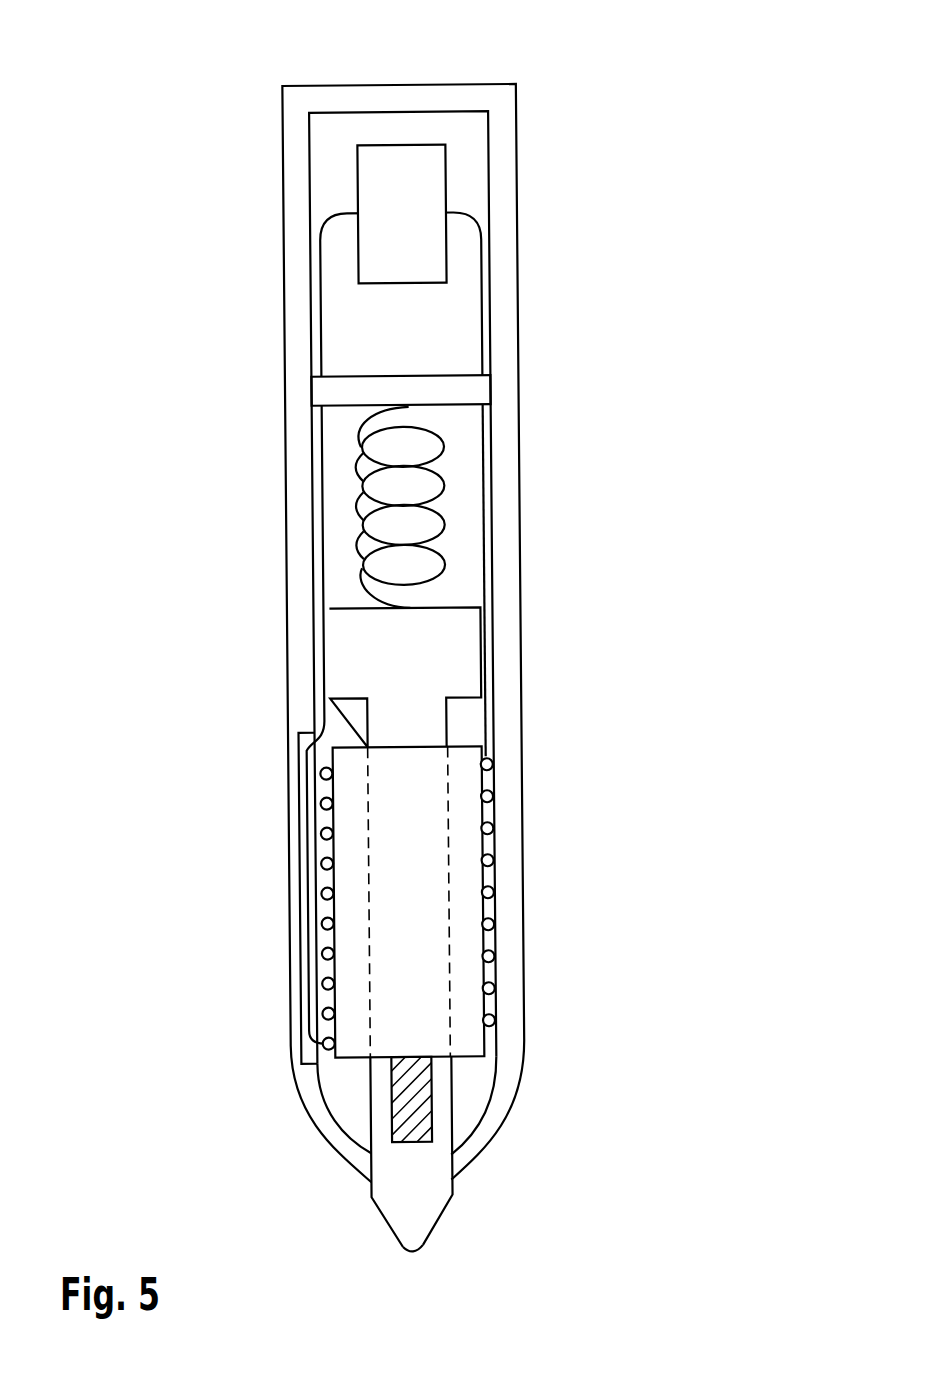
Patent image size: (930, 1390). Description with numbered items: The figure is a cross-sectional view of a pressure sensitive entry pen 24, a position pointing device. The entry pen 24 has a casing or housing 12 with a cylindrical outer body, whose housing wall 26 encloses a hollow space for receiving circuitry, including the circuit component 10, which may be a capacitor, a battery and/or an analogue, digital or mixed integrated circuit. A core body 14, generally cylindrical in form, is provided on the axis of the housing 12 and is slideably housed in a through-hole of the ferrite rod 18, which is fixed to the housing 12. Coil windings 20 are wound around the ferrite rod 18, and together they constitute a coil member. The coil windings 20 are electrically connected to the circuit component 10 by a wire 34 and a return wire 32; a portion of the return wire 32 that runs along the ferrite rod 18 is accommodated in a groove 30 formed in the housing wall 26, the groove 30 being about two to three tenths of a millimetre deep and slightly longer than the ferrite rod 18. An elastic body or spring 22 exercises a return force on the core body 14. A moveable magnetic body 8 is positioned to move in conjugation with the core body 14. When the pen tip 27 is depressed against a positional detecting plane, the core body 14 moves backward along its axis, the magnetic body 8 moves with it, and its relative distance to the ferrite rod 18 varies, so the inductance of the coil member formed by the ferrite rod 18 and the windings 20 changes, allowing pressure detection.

The moveable magnetic body 8 is at (428, 1100).
The circuit component 10 is at (449, 165).
The housing 12 is at (286, 181).
The core body 14 is at (404, 1188).
The ferrite rod 18 is at (467, 850).
The coil windings 20 is at (320, 833).
The spring 22 is at (448, 485).
The entry pen 24 is at (252, 82).
The housing wall 26 is at (505, 207).
The pen tip 27 is at (420, 1248).
The groove 30 is at (297, 950).
The return wire 32 is at (324, 347).
The wire 34 is at (483, 325).